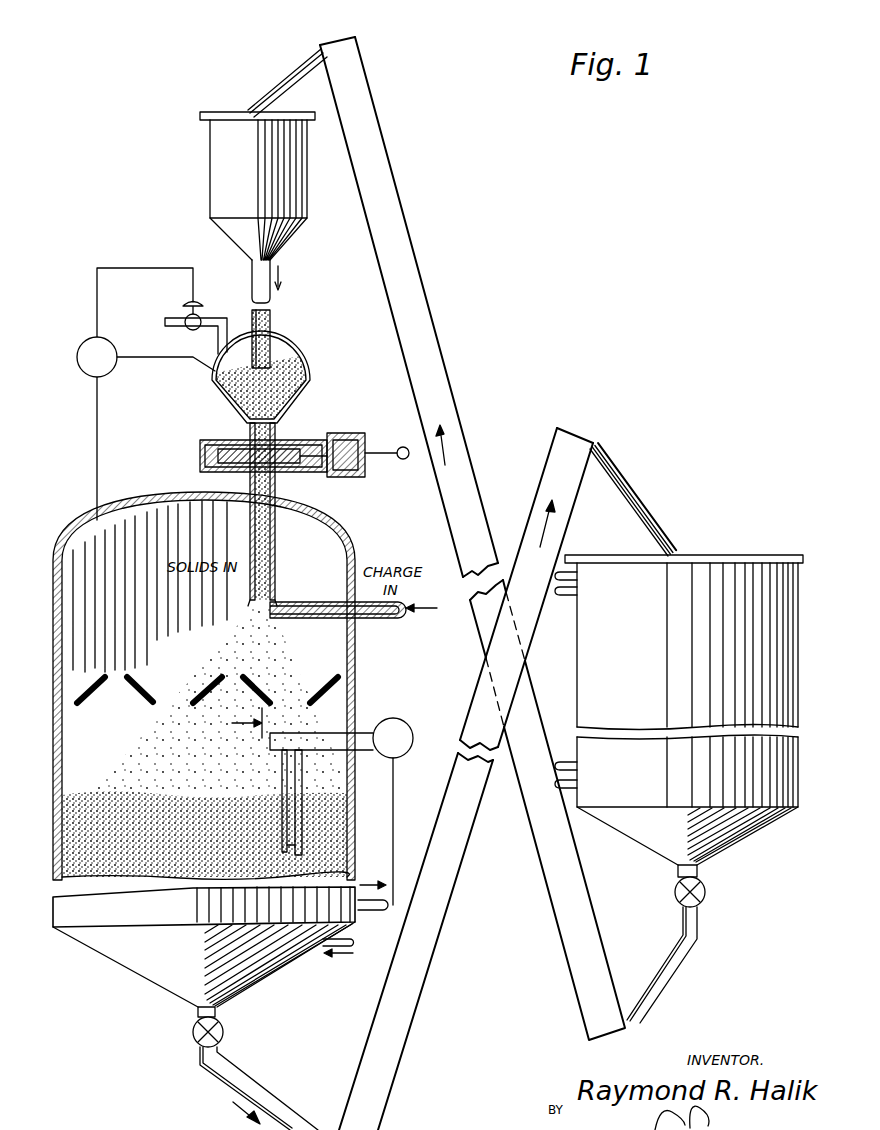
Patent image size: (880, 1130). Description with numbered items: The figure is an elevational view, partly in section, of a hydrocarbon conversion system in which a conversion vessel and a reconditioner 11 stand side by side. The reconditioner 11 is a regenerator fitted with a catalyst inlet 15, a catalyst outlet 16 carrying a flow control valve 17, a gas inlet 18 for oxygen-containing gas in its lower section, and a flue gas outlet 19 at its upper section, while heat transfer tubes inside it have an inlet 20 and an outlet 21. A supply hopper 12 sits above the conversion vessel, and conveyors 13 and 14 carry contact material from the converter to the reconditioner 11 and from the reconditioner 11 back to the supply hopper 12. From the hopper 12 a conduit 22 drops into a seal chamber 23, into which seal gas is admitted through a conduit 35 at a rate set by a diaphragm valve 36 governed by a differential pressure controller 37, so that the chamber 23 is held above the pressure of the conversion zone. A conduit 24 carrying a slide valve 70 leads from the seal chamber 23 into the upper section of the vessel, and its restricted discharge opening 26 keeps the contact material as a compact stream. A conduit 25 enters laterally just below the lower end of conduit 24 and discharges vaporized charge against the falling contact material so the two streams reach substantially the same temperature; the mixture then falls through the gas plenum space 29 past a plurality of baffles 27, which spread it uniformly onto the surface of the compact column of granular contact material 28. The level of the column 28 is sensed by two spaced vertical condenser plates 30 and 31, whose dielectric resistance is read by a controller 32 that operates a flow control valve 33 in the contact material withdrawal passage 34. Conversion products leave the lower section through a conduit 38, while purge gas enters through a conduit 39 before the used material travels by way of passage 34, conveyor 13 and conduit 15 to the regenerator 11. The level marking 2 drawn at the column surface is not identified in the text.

The bed level indicator 2 is at (255, 485).
The reconditioner 11 is at (684, 710).
The supply hopper 12 is at (207, 158).
The conveyor 13 is at (545, 462).
The conveyor 14 is at (412, 283).
The catalyst inlet 15 is at (640, 502).
The catalyst outlet 16 is at (680, 969).
The flow control valve 17 is at (706, 892).
The gas inlet 18 is at (578, 788).
The flue gas outlet 19 is at (577, 585).
The inlet 20 is at (577, 765).
The outlet 21 is at (565, 600).
The conduit 22 is at (252, 268).
The seal chamber 23 is at (290, 347).
The conduit 24 is at (253, 537).
The conduit 25 is at (325, 600).
The discharge opening 26 is at (258, 603).
The baffles 27 is at (137, 676).
The column of granular contact material 28 is at (168, 703).
The gas plenum space 29 is at (92, 518).
The condenser plate 30 is at (282, 775).
The condenser plate 31 is at (302, 783).
The controller 32 is at (341, 811).
The flow control valve 33 is at (193, 1032).
The contact material withdrawal passage 34 is at (262, 1087).
The conduit 35 is at (218, 320).
The diaphragm valve 36 is at (187, 305).
The differential pressure controller 37 is at (146, 394).
The conduit 38 is at (363, 912).
The conduit 39 is at (330, 948).
The slide valve 70 is at (200, 452).